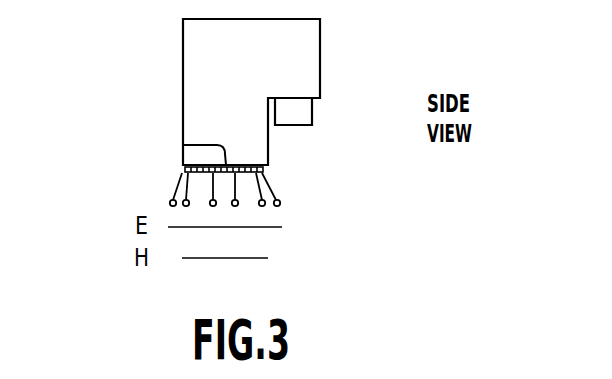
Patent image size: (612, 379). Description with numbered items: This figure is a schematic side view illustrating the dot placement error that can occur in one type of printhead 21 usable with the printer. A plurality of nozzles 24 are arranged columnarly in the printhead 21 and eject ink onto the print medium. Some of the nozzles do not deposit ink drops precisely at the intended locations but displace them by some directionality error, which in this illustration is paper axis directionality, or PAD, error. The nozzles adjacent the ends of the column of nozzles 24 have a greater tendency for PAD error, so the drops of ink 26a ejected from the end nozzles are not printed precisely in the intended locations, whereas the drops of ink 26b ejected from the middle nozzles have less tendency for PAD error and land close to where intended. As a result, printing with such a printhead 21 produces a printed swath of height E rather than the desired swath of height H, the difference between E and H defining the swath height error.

The printhead 21 is at (305, 58).
The nozzles 24 is at (183, 145).
The drops of ink ejected from end nozzles 26a is at (186, 184).
The drops of ink ejected from middle nozzles 26b is at (217, 192).